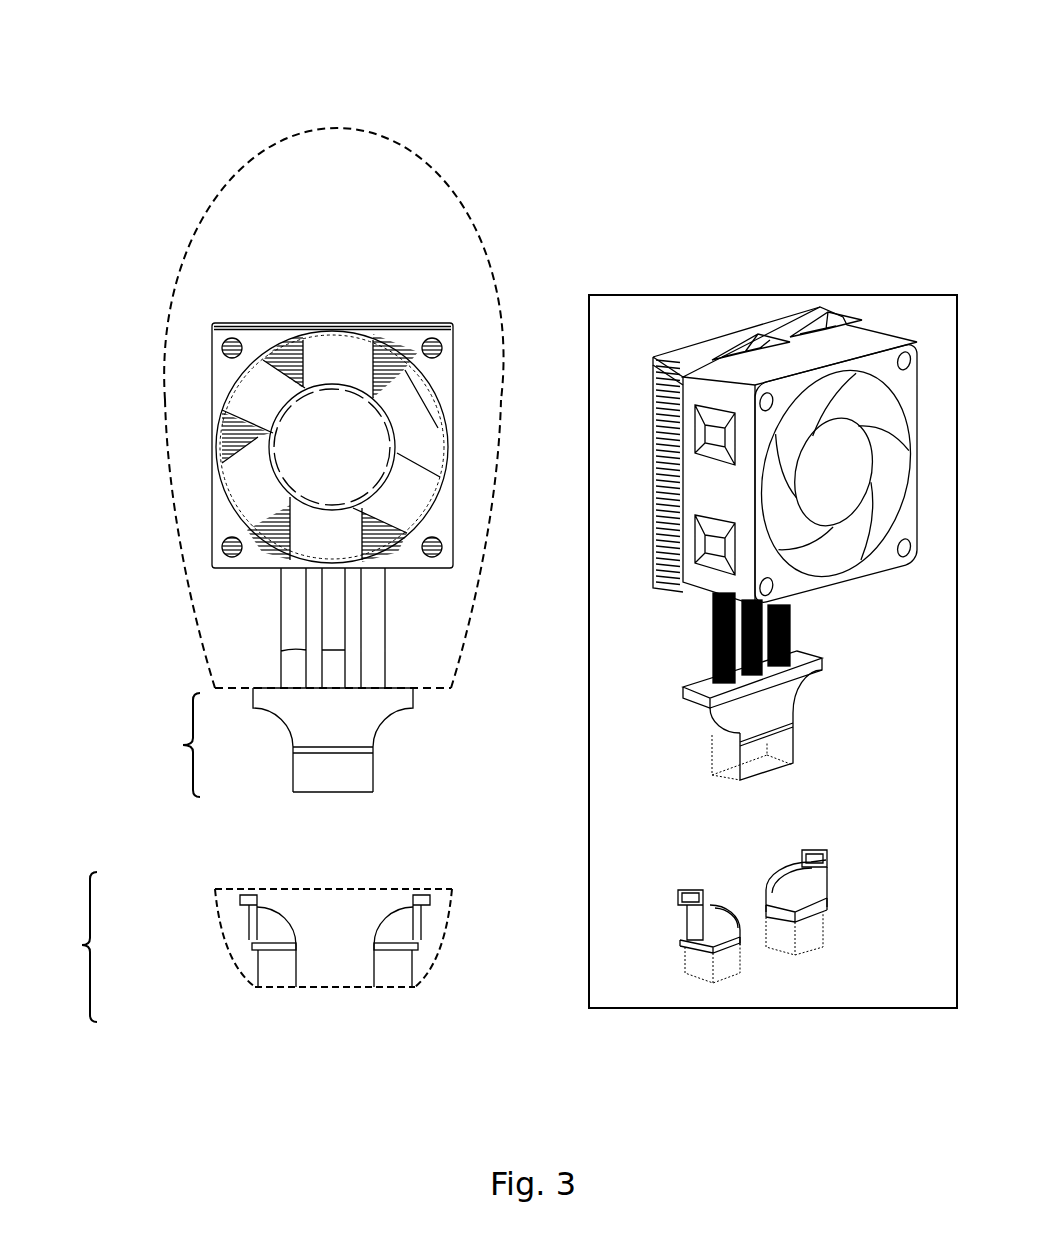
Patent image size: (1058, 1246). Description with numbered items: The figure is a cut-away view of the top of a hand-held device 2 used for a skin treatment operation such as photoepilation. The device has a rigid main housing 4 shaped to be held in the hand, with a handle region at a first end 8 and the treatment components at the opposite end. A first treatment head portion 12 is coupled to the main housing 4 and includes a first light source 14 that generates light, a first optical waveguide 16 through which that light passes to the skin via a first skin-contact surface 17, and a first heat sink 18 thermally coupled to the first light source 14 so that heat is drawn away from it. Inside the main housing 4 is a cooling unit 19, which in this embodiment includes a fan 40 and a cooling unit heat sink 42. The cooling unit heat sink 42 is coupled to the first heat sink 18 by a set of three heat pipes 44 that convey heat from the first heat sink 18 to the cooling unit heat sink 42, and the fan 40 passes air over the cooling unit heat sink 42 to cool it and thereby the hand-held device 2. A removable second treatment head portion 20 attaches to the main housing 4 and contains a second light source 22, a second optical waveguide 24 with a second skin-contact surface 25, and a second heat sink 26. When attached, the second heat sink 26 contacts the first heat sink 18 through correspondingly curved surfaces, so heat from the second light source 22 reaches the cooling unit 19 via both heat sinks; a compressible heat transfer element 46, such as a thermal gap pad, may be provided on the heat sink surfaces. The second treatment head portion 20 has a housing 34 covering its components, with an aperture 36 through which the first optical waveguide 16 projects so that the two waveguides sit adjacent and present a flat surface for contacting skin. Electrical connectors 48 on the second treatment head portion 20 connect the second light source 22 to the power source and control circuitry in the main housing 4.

The hand-held device 2 is at (212, 103).
The main housing 4 is at (405, 242).
The first end 8 is at (238, 617).
The first treatment head portion 12 is at (485, 757).
The first light source 14 is at (714, 735).
The first optical waveguide 16 is at (727, 762).
The first skin-contact surface 17 is at (320, 793).
The first heat sink 18 is at (700, 700).
The cooling unit 19 is at (718, 553).
The second treatment head portion 20 is at (435, 963).
The second light source 22 is at (705, 938).
The second optical waveguide 24 is at (698, 967).
The second skin-contact surface 25 is at (277, 988).
The second heat sink 26 is at (718, 923).
The housing 34 is at (214, 942).
The aperture 36 is at (333, 972).
The fan 40 is at (313, 437).
The cooling unit heat sink 42 is at (378, 543).
The heat pipes 44 is at (712, 668).
The heat transfer element 46 is at (793, 882).
The electrical connectors 48 is at (680, 887).